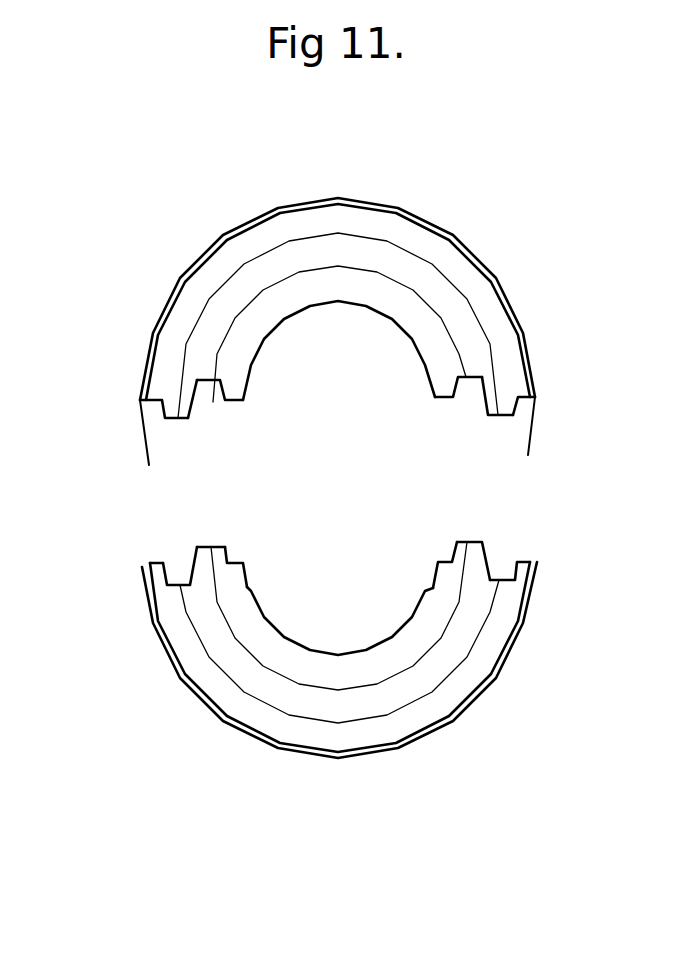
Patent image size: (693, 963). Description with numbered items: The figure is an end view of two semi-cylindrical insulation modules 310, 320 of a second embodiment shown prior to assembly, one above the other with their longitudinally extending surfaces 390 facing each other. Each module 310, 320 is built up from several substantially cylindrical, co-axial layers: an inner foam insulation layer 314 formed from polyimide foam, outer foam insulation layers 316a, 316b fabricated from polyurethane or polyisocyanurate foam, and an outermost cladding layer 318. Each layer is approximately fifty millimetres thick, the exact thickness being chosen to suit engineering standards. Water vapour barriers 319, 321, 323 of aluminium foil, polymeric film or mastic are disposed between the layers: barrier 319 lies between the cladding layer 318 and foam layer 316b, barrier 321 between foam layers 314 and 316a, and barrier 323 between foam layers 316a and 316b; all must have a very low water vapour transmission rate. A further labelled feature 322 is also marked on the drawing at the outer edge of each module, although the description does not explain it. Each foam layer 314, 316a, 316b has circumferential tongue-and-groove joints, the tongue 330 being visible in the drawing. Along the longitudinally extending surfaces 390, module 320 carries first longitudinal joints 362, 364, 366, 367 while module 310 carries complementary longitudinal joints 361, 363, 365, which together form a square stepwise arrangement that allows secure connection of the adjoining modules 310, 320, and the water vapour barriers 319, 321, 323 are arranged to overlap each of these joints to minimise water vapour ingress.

The module 310 is at (145, 637).
The inner foam insulation layer 314 is at (420, 320).
The outer foam insulation layer 316a is at (330, 250).
The outer foam insulation layer 316b is at (272, 230).
The cladding layer 318 is at (195, 270).
The water vapour barrier 319 is at (512, 305).
The module 320 is at (433, 210).
The water vapour barrier 321 is at (447, 340).
The outer channel 322 is at (138, 428).
The water vapour barrier 323 is at (502, 352).
The tongue 330 is at (375, 255).
The longitudinal joint 361 is at (180, 570).
The longitudinal joint 362 is at (192, 410).
The longitudinal joint 363 is at (227, 548).
The longitudinal joint 364 is at (152, 408).
The longitudinal joint 365 is at (153, 558).
The longitudinal joint 366 is at (473, 390).
The longitudinal joint 367 is at (435, 395).
The longitudinally extending surface 390 is at (228, 408).